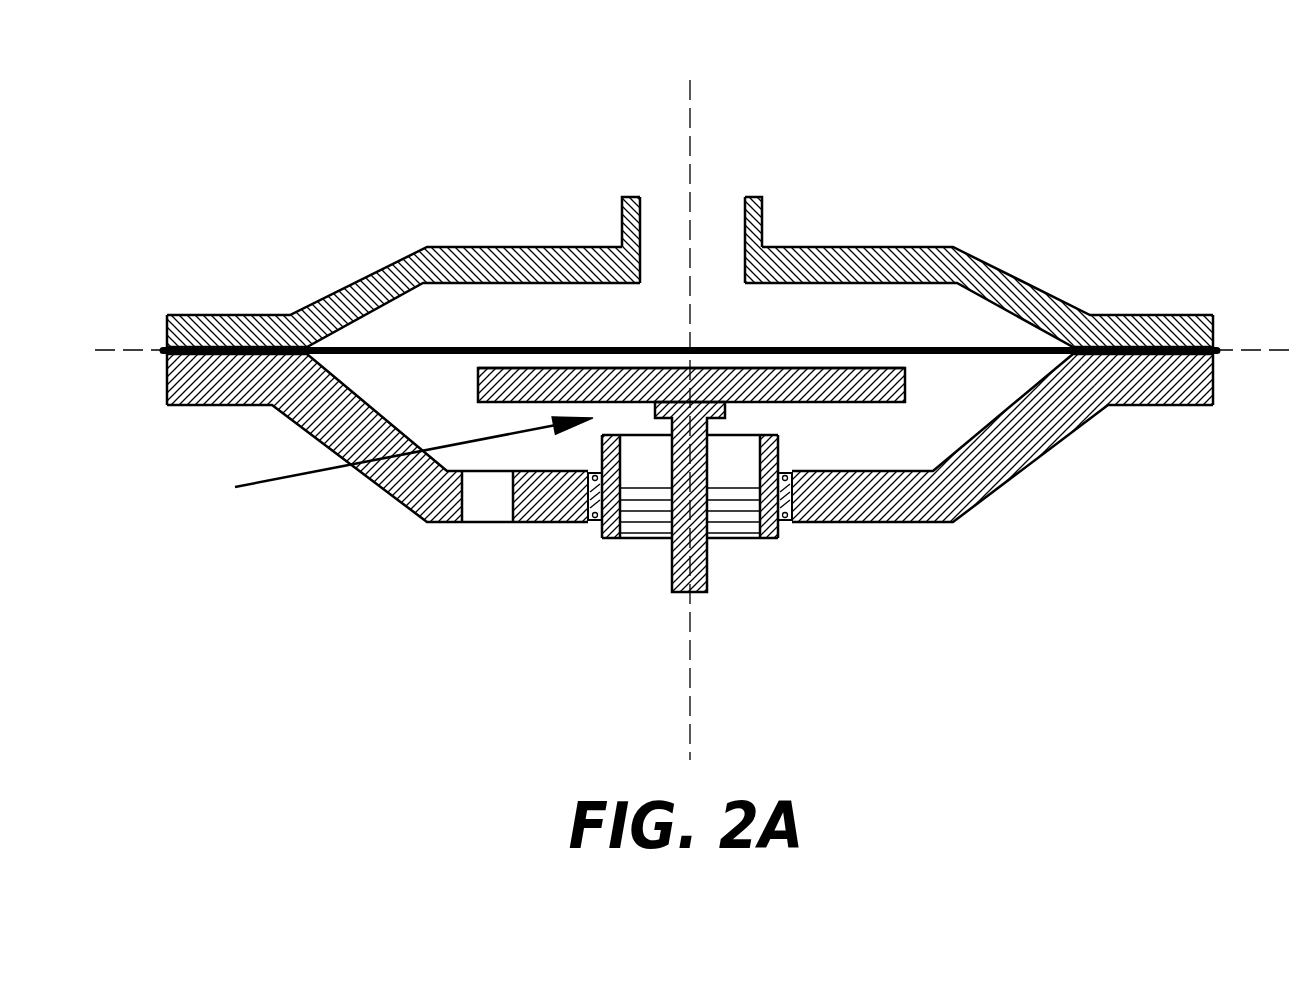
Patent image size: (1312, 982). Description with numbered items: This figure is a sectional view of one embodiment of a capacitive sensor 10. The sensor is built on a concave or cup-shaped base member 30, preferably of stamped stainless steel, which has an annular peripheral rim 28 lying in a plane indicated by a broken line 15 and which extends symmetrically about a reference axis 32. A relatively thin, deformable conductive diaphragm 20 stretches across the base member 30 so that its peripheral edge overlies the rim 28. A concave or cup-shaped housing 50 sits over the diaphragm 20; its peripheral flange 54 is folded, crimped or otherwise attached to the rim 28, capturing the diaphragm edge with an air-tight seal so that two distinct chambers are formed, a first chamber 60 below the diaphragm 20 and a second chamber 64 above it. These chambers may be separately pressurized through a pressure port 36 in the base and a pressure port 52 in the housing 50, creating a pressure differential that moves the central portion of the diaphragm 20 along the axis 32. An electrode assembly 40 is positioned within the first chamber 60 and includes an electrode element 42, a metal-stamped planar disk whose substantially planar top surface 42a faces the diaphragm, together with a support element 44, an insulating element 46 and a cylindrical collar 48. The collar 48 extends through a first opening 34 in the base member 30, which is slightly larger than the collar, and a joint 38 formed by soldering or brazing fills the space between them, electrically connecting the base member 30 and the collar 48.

The capacitive sensor 10 is at (378, 148).
The broken line 15 is at (115, 347).
The conductive diaphragm 20 is at (953, 343).
The annular peripheral rim 28 is at (1143, 380).
The base member 30 is at (1022, 447).
The reference axis 32 is at (692, 180).
The first opening 34 is at (592, 523).
The pressure port 36 is at (477, 512).
The joint 38 is at (785, 513).
The electrode assembly 40 is at (386, 461).
The electrode element 42 is at (830, 388).
The electrode element top surface 42a is at (603, 367).
The support element 44 is at (680, 593).
The insulating element 46 is at (645, 540).
The cylindrical collar 48 is at (765, 542).
The housing 50 is at (847, 247).
The pressure port 52 is at (727, 228).
The peripheral flange 54 is at (1143, 332).
The first chamber 60 is at (448, 400).
The second chamber 64 is at (483, 320).